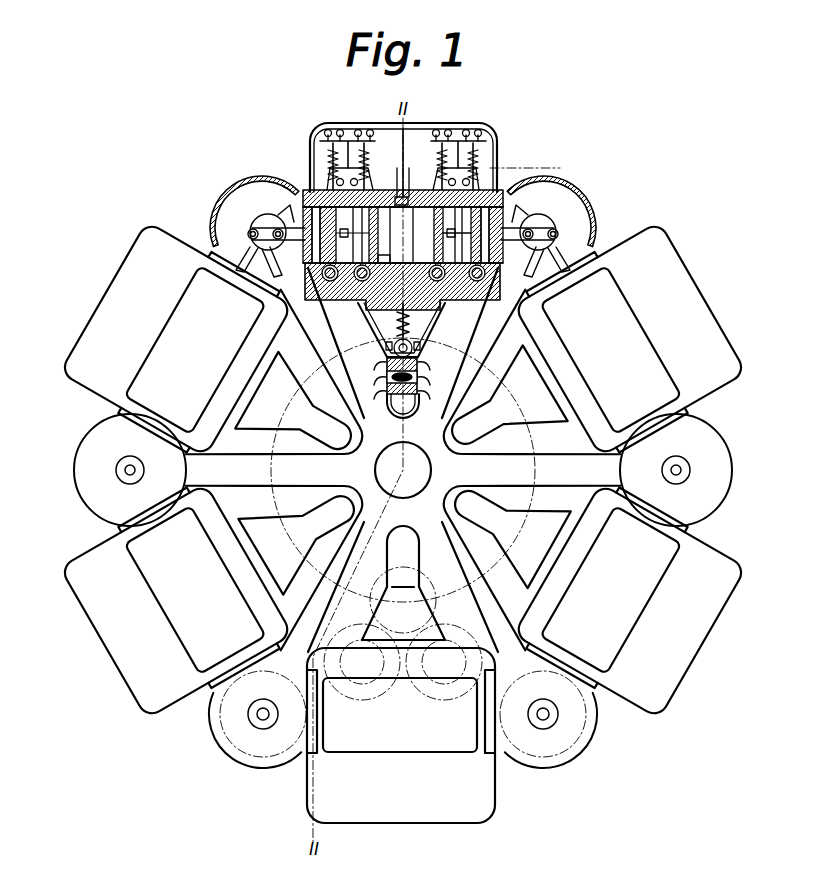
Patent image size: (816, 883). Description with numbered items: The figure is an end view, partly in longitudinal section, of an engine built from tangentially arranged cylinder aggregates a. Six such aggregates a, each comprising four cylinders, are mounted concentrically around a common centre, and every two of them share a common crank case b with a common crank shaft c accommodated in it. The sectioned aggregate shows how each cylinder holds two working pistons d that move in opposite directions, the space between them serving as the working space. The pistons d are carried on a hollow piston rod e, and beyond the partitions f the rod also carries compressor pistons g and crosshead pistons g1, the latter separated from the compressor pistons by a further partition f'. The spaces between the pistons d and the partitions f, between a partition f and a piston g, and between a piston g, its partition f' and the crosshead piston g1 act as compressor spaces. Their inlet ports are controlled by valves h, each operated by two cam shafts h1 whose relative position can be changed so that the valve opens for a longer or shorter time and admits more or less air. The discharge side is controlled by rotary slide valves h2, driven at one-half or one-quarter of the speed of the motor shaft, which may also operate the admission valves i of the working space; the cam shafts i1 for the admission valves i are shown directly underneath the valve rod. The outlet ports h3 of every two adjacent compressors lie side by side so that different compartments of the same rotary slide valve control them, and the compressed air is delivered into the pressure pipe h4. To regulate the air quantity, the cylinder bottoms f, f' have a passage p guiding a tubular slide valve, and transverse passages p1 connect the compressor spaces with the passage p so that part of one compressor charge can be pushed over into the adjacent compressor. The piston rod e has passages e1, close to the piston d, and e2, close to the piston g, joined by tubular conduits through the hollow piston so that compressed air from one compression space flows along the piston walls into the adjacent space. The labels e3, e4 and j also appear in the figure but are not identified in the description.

The cylinder aggregate a is at (633, 333).
The crank case b is at (214, 197).
The crank shaft c is at (680, 467).
The working piston d is at (402, 195).
The piston rod e is at (457, 235).
The passage e1 is at (367, 233).
The passage e2 is at (443, 247).
The piston rod e3 is at (357, 228).
The central column e4 is at (418, 233).
The partition f is at (431, 235).
The partition f' is at (403, 180).
The compressor piston g is at (331, 235).
The crosshead piston g1 is at (310, 235).
The valve h is at (312, 158).
The cam shaft h1 is at (339, 129).
The rotary slide valve h2 is at (314, 281).
The outlet port h3 is at (332, 285).
The pressure pipe h4 is at (366, 284).
The admission valve i is at (412, 326).
The cam shaft i1 is at (420, 350).
The valve spindle j is at (396, 162).
The passage p is at (375, 235).
The passage p1 is at (385, 255).